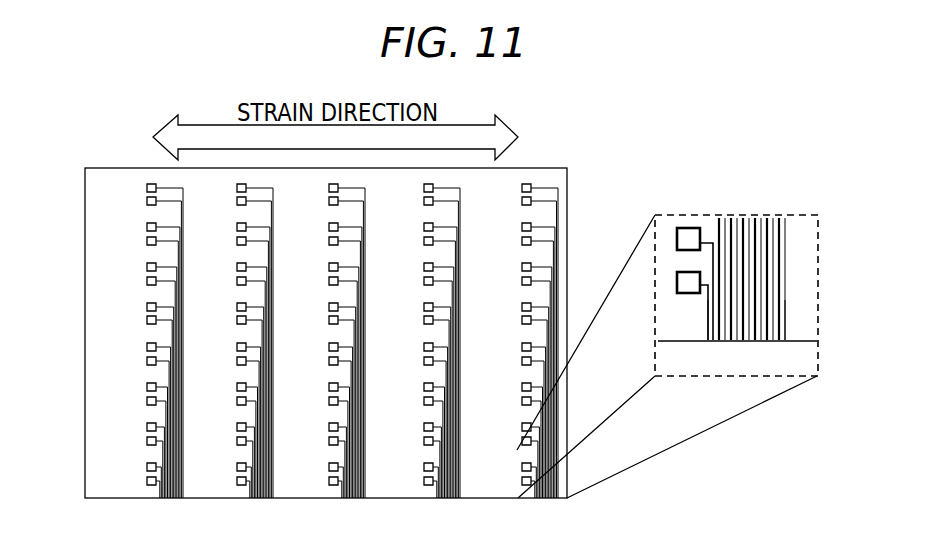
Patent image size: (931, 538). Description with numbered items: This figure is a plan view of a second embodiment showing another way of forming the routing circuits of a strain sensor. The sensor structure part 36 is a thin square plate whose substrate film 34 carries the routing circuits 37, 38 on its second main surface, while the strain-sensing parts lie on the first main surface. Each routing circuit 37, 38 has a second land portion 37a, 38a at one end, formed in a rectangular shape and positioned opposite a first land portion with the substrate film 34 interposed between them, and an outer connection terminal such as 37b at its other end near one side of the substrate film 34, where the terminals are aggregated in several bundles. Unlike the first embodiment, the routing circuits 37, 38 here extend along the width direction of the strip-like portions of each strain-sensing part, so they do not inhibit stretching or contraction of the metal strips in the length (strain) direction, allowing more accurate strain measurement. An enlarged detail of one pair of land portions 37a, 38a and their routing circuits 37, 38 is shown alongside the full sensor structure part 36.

The sensor structure part 36 is at (583, 161).
The routing circuit 38 is at (177, 231).
The second land portion 38a is at (147, 228).
The second land portion 37a is at (148, 242).
The routing circuit 37 is at (163, 243).
The outer connection terminal 37b is at (708, 343).
The substrate film 34 is at (805, 312).